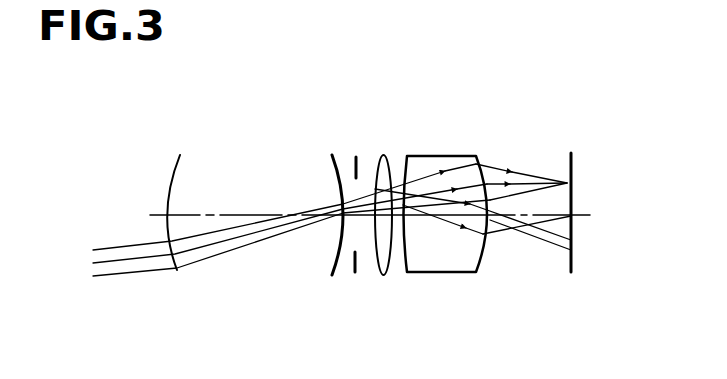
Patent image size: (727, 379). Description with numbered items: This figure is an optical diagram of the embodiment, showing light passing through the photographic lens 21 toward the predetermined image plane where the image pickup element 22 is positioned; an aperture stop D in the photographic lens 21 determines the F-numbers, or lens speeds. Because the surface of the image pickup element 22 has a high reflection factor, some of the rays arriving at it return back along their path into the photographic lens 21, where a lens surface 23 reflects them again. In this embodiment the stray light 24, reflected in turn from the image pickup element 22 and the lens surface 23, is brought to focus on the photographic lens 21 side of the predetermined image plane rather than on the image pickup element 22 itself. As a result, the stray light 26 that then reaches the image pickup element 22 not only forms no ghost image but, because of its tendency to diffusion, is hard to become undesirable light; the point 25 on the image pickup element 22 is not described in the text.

The photographic lens 21 is at (478, 108).
The aperture stop D is at (358, 160).
The lens surface 23 is at (389, 160).
The stray light 24 is at (512, 232).
The image pickup element 22 is at (574, 166).
The image point 25 is at (575, 182).
The stray light 26 is at (575, 235).